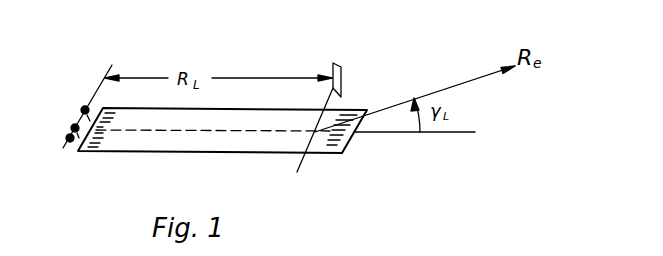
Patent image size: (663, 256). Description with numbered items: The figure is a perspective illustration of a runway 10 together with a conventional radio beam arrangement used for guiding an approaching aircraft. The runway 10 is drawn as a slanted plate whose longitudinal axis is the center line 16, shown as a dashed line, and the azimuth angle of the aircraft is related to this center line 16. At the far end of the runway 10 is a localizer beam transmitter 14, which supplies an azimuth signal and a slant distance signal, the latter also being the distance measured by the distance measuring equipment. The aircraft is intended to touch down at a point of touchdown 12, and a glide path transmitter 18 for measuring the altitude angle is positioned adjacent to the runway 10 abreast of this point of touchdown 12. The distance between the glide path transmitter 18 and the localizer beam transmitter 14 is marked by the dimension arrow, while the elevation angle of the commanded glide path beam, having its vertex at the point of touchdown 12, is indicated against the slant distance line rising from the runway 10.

The runway 10 is at (202, 149).
The point of touchdown 12 is at (312, 136).
The localizer beam transmitter 14 is at (74, 125).
The center line 16 is at (231, 130).
The glide path transmitter 18 is at (335, 62).